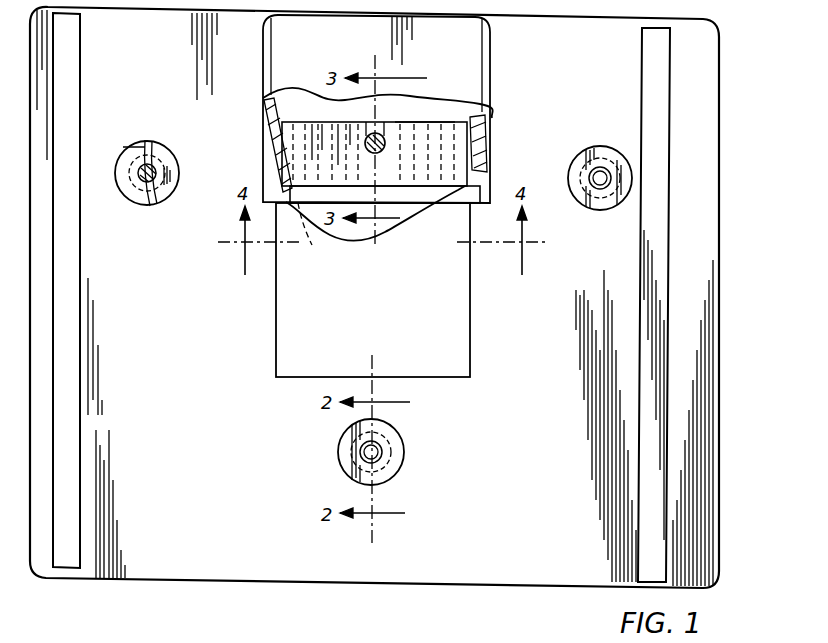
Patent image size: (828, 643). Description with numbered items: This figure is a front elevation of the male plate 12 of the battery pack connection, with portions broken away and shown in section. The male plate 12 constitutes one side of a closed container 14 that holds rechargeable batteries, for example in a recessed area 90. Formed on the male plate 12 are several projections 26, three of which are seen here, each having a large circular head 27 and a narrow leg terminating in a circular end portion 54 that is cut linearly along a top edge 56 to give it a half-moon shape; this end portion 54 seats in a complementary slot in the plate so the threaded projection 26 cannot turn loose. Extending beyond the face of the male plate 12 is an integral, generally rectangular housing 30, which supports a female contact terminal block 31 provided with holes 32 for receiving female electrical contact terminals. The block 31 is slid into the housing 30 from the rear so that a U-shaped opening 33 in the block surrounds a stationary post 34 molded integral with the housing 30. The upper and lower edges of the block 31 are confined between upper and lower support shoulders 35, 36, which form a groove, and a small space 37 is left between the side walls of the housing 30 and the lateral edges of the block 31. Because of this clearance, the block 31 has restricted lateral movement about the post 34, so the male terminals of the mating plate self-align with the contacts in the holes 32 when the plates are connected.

The male plate 12 is at (700, 297).
The closed container 14 is at (690, 18).
The projection 26 is at (168, 203).
The large circular head 27 is at (173, 163).
The integral housing 30 is at (484, 87).
The female contact terminal block 31 is at (413, 121).
The holes 32 is at (315, 233).
The U-shaped opening 33 is at (365, 126).
The stationary post 34 is at (377, 132).
The upper support shoulder 35 is at (287, 97).
The lower support shoulder 36 is at (280, 168).
The small space 37 is at (280, 132).
The circular end portion 54 is at (143, 195).
The top edge 56 is at (143, 140).
The recessed area 90 is at (397, 222).